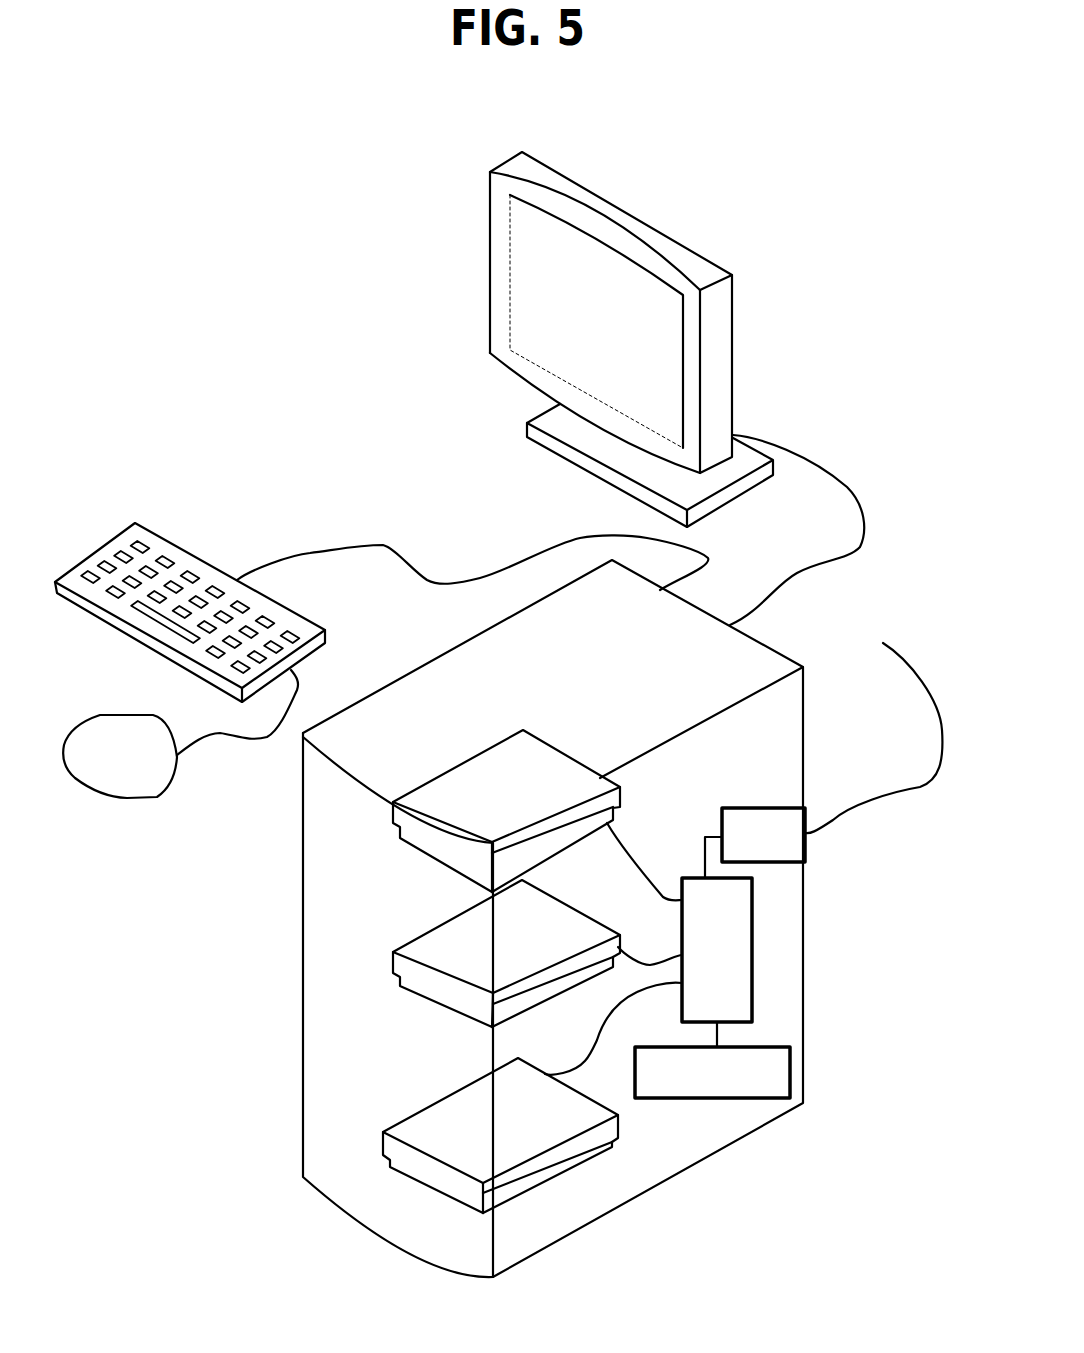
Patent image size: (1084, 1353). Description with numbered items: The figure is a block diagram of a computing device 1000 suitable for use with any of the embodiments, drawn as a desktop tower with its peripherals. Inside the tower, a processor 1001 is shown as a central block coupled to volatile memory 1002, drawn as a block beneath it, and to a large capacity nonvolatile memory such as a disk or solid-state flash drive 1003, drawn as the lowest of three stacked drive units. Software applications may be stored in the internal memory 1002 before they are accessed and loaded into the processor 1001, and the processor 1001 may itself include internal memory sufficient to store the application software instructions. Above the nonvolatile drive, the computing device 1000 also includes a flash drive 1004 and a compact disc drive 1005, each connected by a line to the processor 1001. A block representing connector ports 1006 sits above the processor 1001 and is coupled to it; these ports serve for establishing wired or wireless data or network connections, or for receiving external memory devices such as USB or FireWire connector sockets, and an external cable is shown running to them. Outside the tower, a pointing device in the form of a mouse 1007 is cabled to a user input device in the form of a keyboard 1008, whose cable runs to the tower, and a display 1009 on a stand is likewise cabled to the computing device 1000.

The computing device 1000 is at (805, 698).
The processor 1001 is at (744, 963).
The volatile memory 1002 is at (740, 1086).
The disk or solid-state flash drive 1003 is at (618, 1133).
The flash drive 1004 is at (613, 805).
The compact disc (CD) drive 1005 is at (562, 997).
The connector ports 1006 is at (790, 848).
The mouse 1007 is at (115, 800).
The keyboard 1008 is at (327, 637).
The display 1009 is at (733, 357).